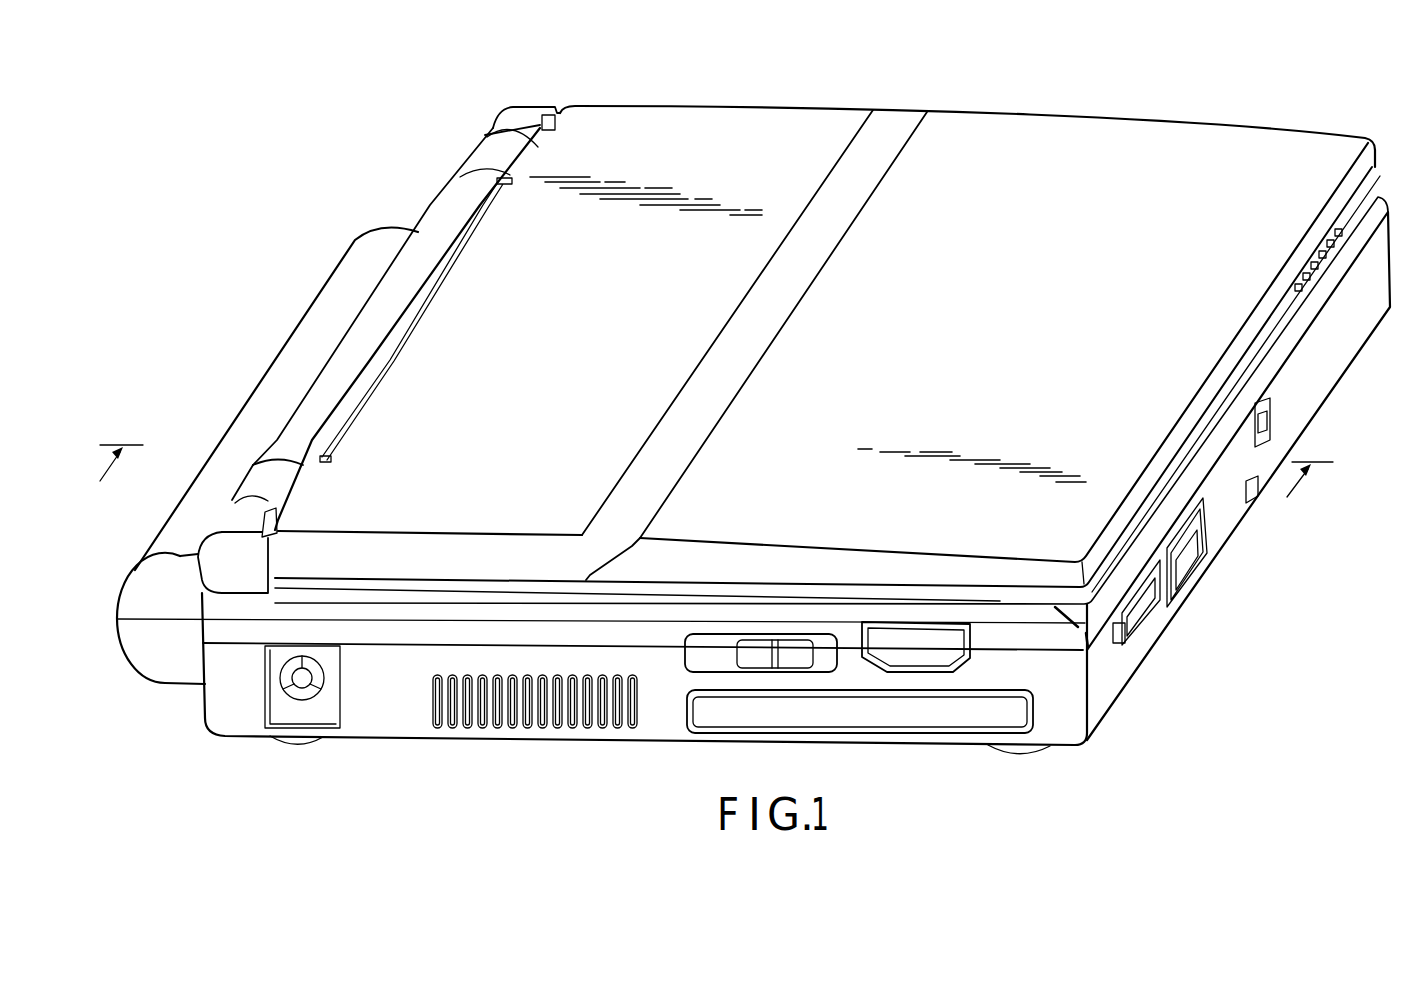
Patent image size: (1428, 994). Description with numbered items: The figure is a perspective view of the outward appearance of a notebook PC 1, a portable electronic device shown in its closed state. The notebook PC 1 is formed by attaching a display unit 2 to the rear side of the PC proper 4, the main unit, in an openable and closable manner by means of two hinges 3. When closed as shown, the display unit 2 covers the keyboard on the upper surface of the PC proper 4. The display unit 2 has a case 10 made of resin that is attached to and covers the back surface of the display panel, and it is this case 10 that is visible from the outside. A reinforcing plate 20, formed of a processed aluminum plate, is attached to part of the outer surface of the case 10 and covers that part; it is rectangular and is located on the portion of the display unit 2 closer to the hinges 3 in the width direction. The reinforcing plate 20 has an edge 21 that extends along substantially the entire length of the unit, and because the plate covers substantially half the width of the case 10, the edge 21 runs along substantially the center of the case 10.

The notebook PC 1 is at (1376, 124).
The display unit 2 is at (1157, 410).
The hinges 3 is at (493, 152).
The PC proper 4 is at (1325, 350).
The case 10 is at (1143, 145).
The reinforcing plate 20 is at (505, 268).
The edge 21 is at (787, 317).